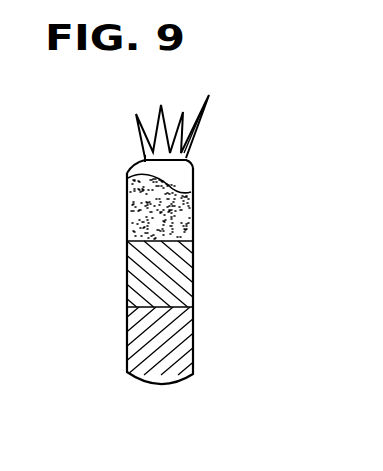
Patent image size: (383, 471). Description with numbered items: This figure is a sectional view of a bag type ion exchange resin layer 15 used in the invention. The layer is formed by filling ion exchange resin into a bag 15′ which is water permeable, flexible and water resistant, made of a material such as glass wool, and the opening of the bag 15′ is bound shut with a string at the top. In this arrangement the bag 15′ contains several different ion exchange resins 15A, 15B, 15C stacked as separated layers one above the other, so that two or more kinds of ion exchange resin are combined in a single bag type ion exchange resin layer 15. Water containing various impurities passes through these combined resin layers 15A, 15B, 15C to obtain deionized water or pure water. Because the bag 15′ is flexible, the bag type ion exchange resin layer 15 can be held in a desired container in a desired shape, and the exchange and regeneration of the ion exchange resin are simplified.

The bag type ion exchange resin layer 15 is at (127, 325).
The bag 15′ is at (130, 215).
The ion exchange resin 15A is at (175, 217).
The ion exchange resin 15B is at (193, 282).
The ion exchange resin 15C is at (193, 340).